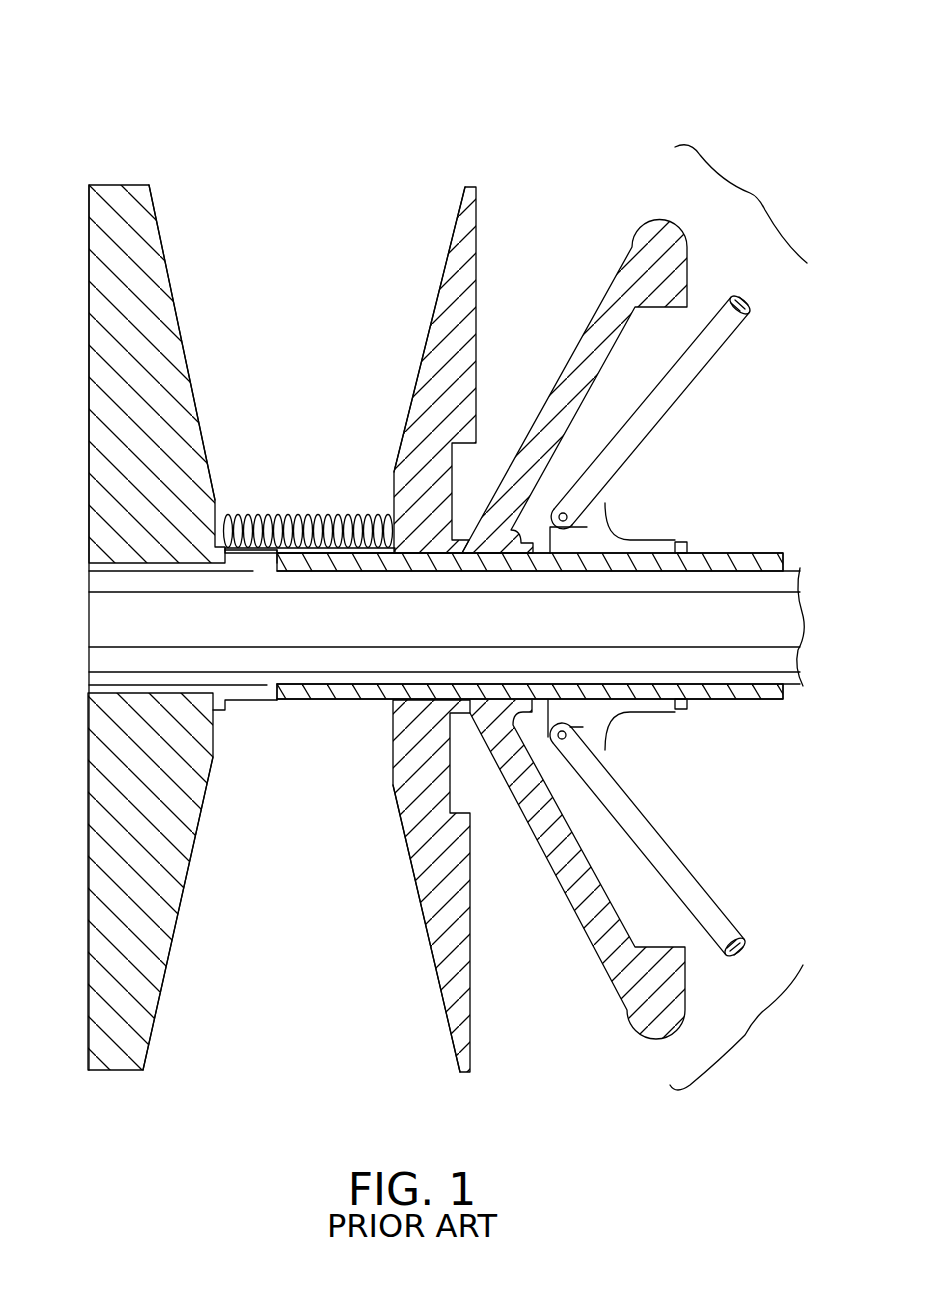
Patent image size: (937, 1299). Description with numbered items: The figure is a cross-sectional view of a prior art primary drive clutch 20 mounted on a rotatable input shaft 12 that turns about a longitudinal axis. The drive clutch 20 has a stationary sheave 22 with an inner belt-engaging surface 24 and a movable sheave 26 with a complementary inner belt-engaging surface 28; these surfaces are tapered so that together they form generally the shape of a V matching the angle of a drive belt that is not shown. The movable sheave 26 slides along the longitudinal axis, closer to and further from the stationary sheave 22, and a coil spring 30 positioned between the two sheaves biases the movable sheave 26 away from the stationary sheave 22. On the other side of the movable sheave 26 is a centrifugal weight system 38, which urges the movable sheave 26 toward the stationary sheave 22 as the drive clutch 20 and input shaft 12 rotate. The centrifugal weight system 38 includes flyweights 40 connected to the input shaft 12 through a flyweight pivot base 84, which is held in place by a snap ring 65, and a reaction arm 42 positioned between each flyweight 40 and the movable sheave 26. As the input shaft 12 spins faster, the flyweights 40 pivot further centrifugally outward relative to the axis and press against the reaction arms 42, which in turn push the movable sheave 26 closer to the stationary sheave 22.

The drive clutch 20 is at (116, 80).
The input shaft 12 is at (110, 585).
The stationary sheave 22 is at (103, 275).
The inner belt-engaging surface 24 is at (178, 296).
The movable sheave 26 is at (462, 230).
The complementary inner belt-engaging surface 28 is at (438, 279).
The coil spring 30 is at (270, 512).
The centrifugal weight system 38 is at (738, 617).
The flyweight 40 is at (610, 462).
The reaction arm 42 is at (633, 262).
The snap ring 65 is at (690, 548).
The flyweight pivot base 84 is at (617, 526).